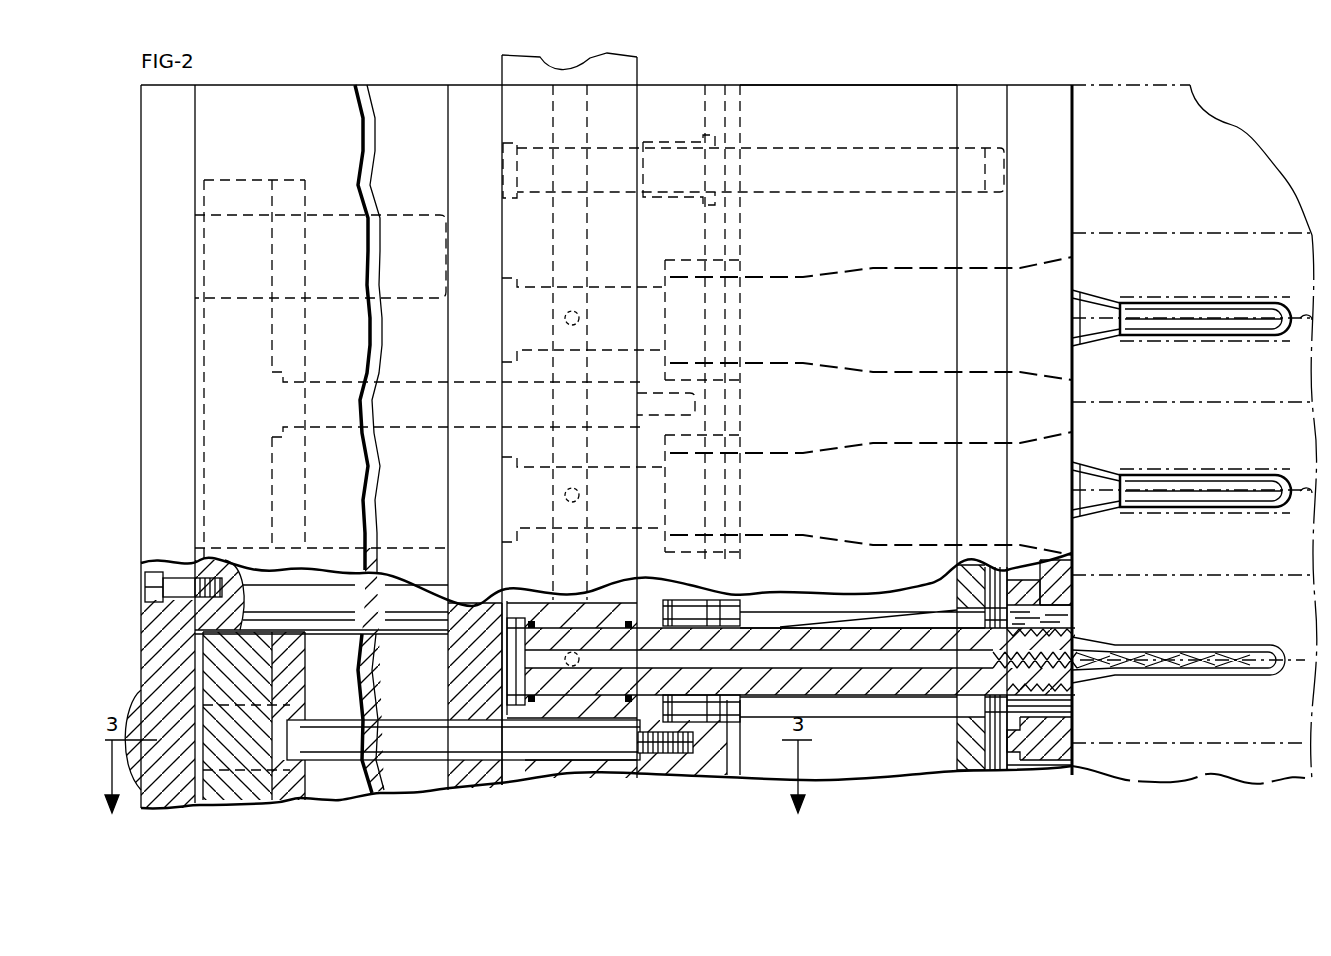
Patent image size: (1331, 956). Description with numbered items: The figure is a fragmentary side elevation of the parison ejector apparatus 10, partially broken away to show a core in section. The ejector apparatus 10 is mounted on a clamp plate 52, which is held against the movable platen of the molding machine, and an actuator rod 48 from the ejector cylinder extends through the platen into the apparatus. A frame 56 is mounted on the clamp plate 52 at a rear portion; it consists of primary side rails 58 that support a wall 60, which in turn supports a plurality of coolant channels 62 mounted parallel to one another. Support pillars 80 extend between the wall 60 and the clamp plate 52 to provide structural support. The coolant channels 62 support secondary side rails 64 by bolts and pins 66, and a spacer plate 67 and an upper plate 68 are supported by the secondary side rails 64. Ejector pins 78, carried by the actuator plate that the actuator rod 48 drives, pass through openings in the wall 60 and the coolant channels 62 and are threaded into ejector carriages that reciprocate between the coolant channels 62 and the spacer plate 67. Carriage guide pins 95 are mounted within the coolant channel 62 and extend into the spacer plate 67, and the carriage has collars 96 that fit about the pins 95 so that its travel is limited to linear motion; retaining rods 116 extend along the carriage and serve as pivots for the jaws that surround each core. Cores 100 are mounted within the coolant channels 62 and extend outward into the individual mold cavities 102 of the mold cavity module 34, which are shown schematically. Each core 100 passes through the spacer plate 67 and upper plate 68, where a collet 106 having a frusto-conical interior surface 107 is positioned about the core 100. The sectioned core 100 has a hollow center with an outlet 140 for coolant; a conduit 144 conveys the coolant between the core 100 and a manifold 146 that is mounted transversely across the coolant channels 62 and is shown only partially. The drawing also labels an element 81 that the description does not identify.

The parison ejector apparatus 10 is at (1090, 132).
The mold cavity module 34 is at (1256, 128).
The actuator rod 48 is at (140, 692).
The clamp plate 52 is at (153, 246).
The frame 56 is at (878, 108).
The primary side rails 58 is at (333, 112).
The wall 60 is at (458, 246).
The coolant channels 62 is at (513, 246).
The secondary side rails 64 is at (821, 246).
The pins 66 is at (978, 760).
The spacer plate 67 is at (966, 246).
The upper plate 68 is at (1026, 246).
The ejector pins 78 is at (445, 430).
The support pillars 80 is at (412, 215).
The bolt 81 is at (145, 574).
The carriage guide pins 95 is at (928, 148).
The collars 96 is at (735, 140).
The cores 100 is at (610, 682).
The mold cavities 102 is at (1237, 297).
The collet 106 is at (1040, 555).
The frusto-conical interior surface 107 is at (1050, 605).
The retaining rods 116 is at (718, 775).
The outlet 140 is at (580, 500).
The conduit 144 is at (553, 142).
The manifold 146 is at (637, 70).